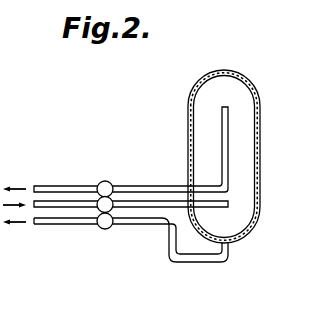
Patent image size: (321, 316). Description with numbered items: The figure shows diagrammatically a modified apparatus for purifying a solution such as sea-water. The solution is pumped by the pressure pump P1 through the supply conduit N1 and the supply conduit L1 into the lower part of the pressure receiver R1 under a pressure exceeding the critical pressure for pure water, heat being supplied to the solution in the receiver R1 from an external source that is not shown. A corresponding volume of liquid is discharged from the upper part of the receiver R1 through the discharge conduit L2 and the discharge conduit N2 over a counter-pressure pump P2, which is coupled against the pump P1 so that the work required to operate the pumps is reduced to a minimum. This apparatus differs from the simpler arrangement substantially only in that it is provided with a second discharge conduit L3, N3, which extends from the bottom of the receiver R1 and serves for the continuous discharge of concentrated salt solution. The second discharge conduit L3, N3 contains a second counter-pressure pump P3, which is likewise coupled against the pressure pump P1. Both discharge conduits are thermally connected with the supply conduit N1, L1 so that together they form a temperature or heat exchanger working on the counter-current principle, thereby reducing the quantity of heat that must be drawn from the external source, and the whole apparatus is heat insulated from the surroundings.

The receiver R1 is at (250, 123).
The supply conduit L1 is at (141, 201).
The discharge conduit L2 is at (170, 186).
The second discharge conduit L3 is at (191, 262).
The pump P1 is at (112, 208).
The counter-pressure pump P2 is at (111, 182).
The second counter-pressure pump P3 is at (110, 228).
The supply conduit N1 is at (63, 207).
The discharge conduit N2 is at (67, 186).
The second discharge conduit N3 is at (86, 224).